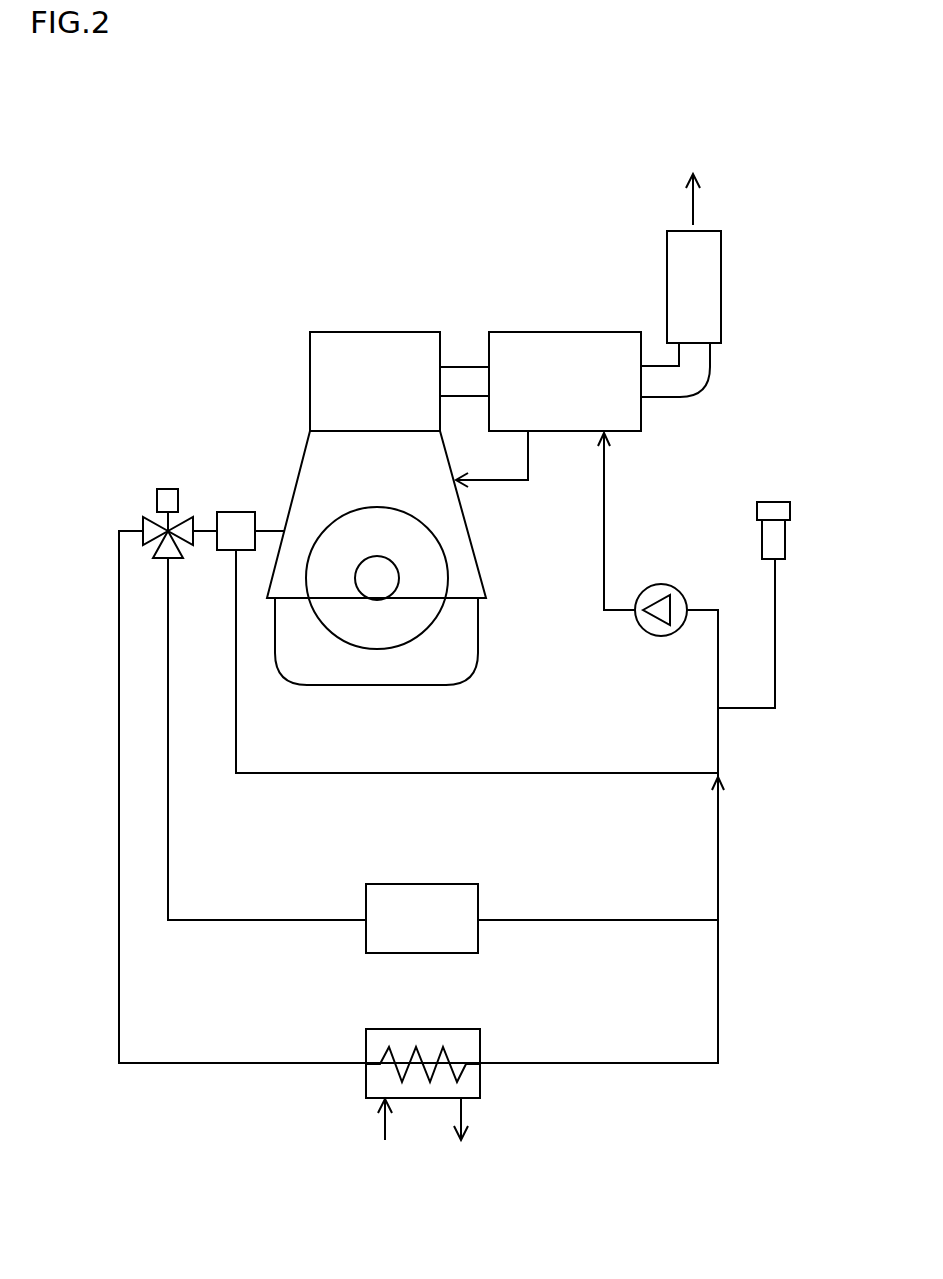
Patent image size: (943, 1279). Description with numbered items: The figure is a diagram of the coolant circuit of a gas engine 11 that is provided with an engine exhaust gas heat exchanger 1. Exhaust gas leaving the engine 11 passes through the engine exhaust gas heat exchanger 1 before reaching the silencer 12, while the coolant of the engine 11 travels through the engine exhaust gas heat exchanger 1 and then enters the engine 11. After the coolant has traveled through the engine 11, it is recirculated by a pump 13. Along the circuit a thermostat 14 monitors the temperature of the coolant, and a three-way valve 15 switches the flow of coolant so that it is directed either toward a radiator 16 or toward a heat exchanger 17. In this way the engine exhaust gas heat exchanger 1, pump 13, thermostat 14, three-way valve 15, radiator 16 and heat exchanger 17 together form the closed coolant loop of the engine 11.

The engine exhaust gas heat exchanger 1 is at (570, 332).
The gas engine 11 is at (357, 331).
The silencer 12 is at (703, 305).
The pump 13 is at (657, 585).
The thermostat 14 is at (235, 512).
The three-way valve 15 is at (170, 489).
The radiator 16 is at (427, 884).
The heat exchanger 17 is at (428, 1029).